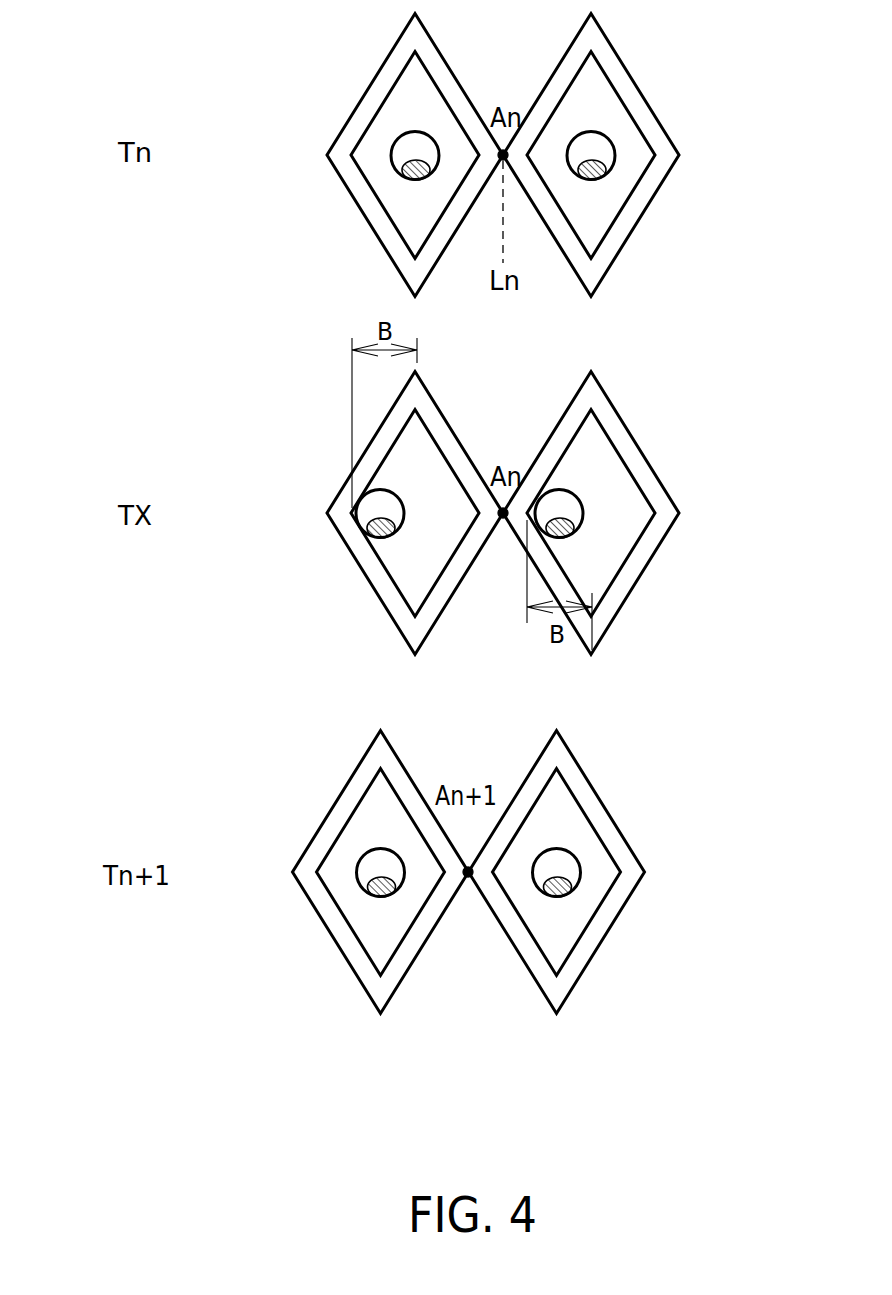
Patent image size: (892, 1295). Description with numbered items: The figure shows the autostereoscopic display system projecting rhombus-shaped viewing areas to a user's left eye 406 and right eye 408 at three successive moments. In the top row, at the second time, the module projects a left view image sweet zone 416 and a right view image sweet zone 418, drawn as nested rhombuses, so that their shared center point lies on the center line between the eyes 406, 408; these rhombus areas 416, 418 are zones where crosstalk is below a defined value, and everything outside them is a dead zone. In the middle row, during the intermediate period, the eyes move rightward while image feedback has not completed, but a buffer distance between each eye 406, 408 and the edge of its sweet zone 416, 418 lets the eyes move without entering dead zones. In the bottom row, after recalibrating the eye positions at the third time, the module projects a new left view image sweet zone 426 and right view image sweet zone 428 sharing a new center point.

The left eye 406 is at (605, 135).
The right eye 408 is at (403, 132).
The left view image sweet zone 416 is at (627, 205).
The right view image sweet zone 418 is at (382, 206).
The left view image sweet zone 426 is at (592, 921).
The right view image sweet zone 428 is at (345, 921).